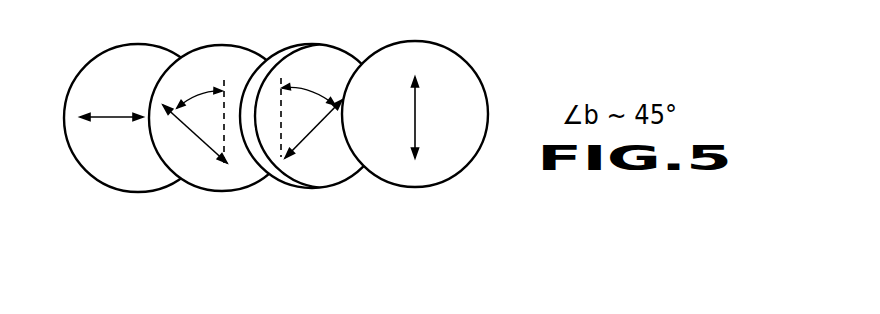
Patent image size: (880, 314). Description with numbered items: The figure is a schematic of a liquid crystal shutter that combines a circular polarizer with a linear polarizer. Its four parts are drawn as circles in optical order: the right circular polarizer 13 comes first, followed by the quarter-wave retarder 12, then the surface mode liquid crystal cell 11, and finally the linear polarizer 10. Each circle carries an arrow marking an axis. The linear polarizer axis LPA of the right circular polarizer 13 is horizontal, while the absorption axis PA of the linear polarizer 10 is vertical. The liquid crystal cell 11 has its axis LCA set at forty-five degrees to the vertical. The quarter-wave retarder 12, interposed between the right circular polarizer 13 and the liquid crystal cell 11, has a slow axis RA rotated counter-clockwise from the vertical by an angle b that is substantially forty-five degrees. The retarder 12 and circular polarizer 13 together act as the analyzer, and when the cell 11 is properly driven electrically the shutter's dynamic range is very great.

The linear polarizer 10 is at (438, 44).
The surface mode liquid crystal cell 11 is at (321, 44).
The quarter-wave retarder 12 is at (220, 45).
The right circular polarizer 13 is at (113, 48).
The absorption axis PA is at (418, 125).
The liquid crystal cell axis LCA is at (310, 133).
The slow axis RA is at (197, 140).
The linear polarizer axis LPA is at (112, 118).